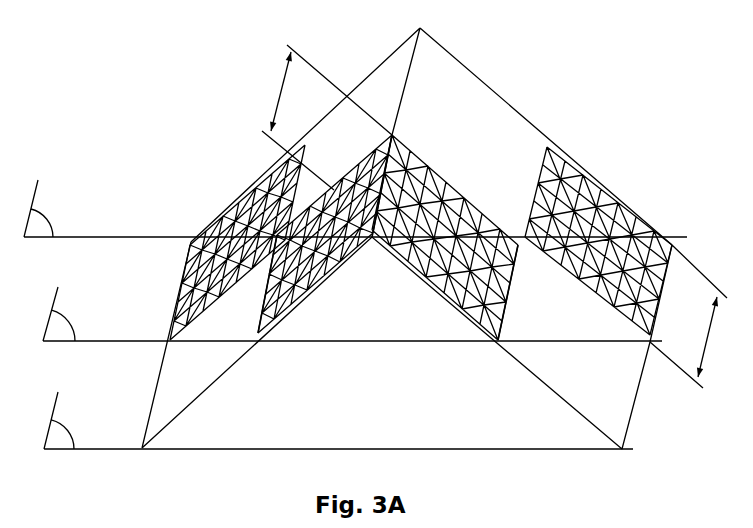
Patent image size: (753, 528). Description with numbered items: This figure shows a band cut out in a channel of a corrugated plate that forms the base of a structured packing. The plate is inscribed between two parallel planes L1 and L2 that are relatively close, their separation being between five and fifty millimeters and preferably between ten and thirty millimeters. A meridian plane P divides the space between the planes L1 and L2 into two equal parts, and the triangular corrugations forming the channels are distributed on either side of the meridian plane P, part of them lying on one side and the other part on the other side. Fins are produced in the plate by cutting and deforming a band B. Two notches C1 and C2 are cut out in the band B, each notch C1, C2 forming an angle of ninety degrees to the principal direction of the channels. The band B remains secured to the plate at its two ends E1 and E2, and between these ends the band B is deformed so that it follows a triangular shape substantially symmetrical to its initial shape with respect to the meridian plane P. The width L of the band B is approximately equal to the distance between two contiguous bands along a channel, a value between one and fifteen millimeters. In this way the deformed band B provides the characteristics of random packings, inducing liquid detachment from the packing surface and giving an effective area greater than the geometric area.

The parallel plane L2 is at (355, 208).
The meridian plane P is at (352, 314).
The parallel plane L1 is at (338, 420).
The width of band L is at (489, 216).
The notch C1 is at (438, 161).
The notch C2 is at (395, 255).
The band B is at (453, 260).
The end of band E1 is at (263, 295).
The end of band E2 is at (507, 313).